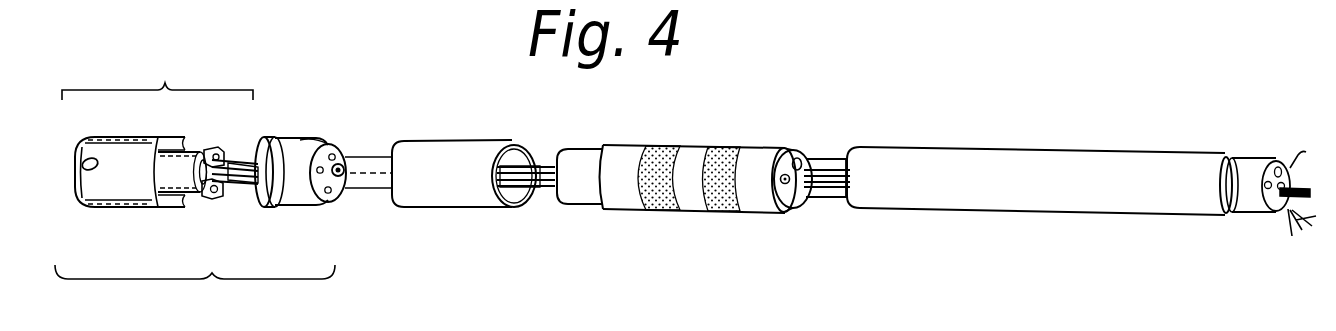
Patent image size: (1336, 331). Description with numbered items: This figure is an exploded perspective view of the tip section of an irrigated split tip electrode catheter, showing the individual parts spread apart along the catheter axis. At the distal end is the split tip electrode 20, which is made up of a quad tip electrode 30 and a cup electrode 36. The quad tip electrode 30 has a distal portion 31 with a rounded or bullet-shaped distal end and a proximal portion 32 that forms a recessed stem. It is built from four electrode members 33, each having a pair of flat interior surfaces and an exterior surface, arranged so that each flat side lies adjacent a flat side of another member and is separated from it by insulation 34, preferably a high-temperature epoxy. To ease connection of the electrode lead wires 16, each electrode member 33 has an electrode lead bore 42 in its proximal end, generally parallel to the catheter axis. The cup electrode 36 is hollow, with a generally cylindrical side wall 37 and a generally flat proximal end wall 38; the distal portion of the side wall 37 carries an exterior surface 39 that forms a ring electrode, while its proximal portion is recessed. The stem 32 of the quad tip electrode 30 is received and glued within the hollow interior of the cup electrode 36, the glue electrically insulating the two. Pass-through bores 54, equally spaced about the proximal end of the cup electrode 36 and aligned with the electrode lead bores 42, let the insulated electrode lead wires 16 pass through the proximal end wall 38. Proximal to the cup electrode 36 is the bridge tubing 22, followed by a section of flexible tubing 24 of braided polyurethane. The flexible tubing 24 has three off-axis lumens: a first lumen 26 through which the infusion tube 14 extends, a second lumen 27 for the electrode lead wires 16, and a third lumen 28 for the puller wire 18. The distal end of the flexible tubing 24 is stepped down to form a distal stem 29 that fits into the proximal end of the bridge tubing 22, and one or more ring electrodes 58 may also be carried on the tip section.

The infusion tube 14 is at (243, 170).
The electrode lead wires 16 is at (243, 160).
The puller wire 18 is at (825, 158).
The split tip electrode 20 is at (195, 294).
The bridge tubing 22 is at (482, 141).
The flexible tubing 24 is at (712, 147).
The first lumen 26 is at (802, 208).
The second lumen 27 is at (784, 196).
The third lumen 28 is at (792, 157).
The distal stem 29 is at (578, 192).
The quad tip electrode 30 is at (157, 70).
The distal portion 31 is at (118, 210).
The proximal portion 32 is at (200, 203).
The electrode members 33 is at (103, 197).
The insulation 34 is at (80, 190).
The cup electrode 36 is at (320, 135).
The side wall 37 is at (305, 190).
The proximal end wall 38 is at (345, 150).
The exterior surface 39 is at (270, 198).
The electrode lead bore 42 is at (216, 149).
The pass-through bores 54 is at (350, 165).
The ring electrodes 58 is at (662, 147).